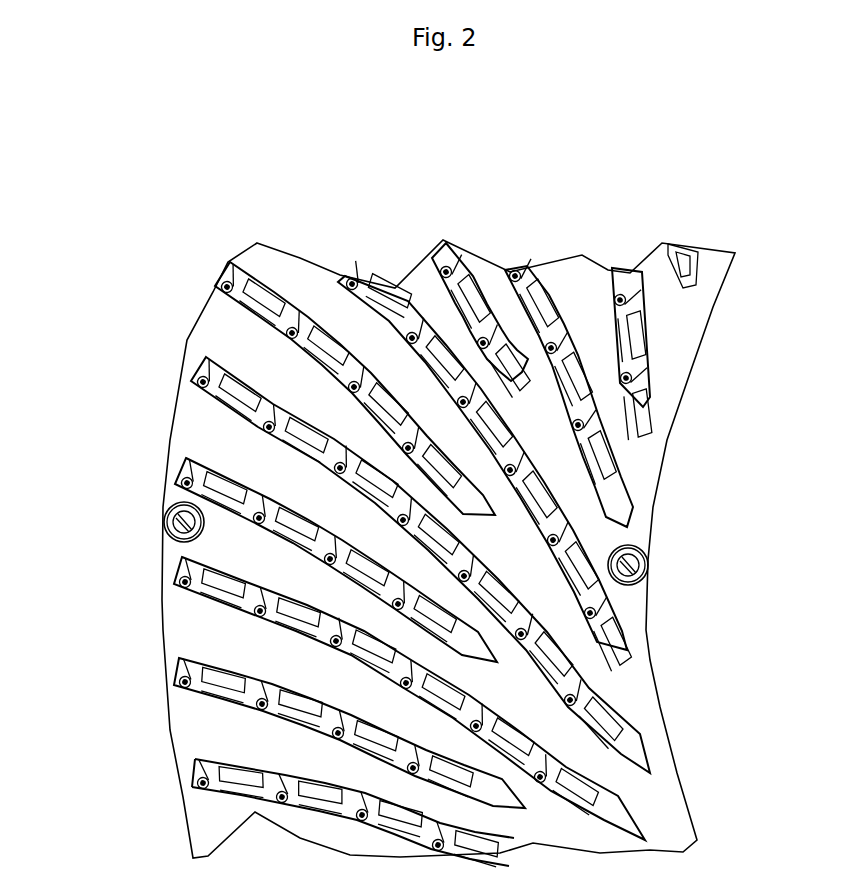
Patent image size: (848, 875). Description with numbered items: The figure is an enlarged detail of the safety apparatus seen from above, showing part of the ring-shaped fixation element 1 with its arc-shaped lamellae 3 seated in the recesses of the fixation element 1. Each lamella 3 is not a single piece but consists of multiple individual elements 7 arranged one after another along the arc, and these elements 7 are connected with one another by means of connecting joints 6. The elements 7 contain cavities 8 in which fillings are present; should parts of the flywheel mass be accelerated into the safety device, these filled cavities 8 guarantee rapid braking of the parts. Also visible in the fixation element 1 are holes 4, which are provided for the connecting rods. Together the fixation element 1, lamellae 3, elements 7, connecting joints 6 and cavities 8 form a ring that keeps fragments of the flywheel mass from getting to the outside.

The fixation element 1 is at (262, 258).
The lamellae 3 is at (215, 280).
The holes 4 is at (637, 545).
The connecting joints 6 is at (200, 383).
The elements 7 is at (185, 475).
The cavities 8 is at (185, 577).